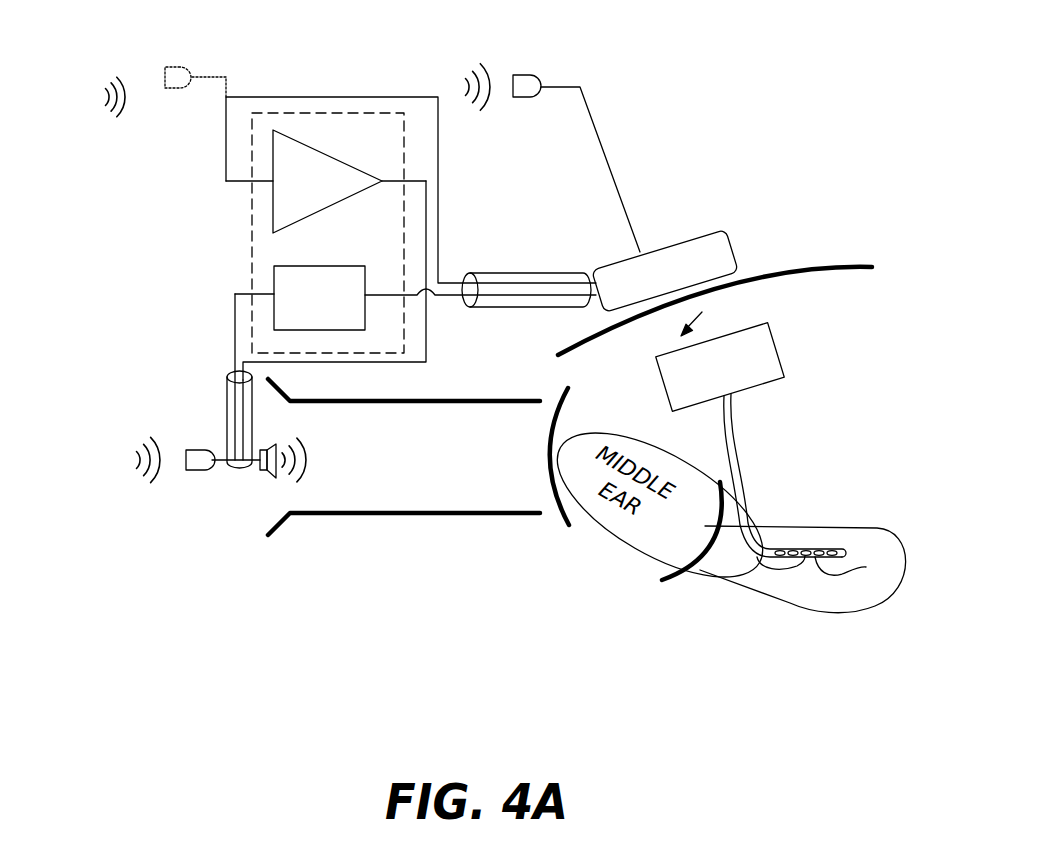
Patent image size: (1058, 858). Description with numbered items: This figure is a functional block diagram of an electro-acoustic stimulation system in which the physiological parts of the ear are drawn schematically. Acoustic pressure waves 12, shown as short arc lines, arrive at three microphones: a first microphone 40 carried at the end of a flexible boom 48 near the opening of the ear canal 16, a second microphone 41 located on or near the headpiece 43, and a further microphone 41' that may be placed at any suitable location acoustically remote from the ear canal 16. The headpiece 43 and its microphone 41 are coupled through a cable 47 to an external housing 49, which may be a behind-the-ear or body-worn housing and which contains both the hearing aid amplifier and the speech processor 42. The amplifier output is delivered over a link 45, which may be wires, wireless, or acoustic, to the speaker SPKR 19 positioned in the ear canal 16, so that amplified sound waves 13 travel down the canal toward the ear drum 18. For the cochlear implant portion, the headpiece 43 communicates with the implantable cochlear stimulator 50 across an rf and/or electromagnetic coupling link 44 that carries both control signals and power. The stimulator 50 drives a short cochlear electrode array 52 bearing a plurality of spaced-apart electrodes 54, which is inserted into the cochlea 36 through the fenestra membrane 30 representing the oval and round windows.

The acoustic pressure wave 12 is at (105, 95).
The microphone 41' is at (188, 82).
The second microphone 41 is at (570, 134).
The speech processor 42 is at (313, 266).
The external housing 49 is at (252, 253).
The link 45 is at (427, 356).
The cable 47 is at (525, 273).
The headpiece 43 is at (732, 237).
The coupling link 44 is at (702, 312).
The implantable cochlear stimulator 50 is at (783, 358).
The cochlear electrode array 52 is at (746, 471).
The cochlea 36 is at (846, 527).
The electrodes 54 is at (758, 558).
The flexible boom 48 is at (227, 405).
The first microphone 40 is at (208, 450).
The amplified sound waves 13 is at (303, 449).
The SPKR 19 is at (262, 472).
The ear canal 16 is at (352, 515).
The ear drum 18 is at (553, 512).
The fenestra membrane 30 is at (663, 578).